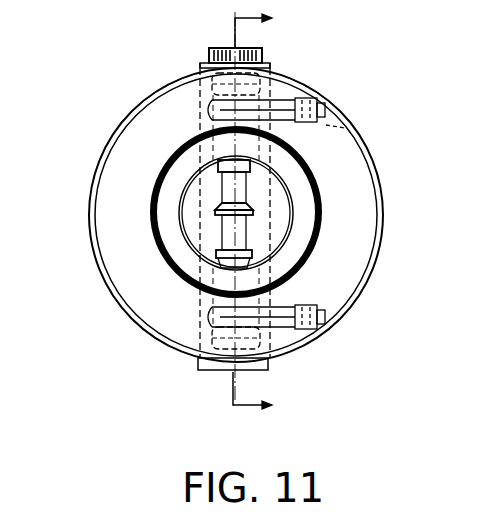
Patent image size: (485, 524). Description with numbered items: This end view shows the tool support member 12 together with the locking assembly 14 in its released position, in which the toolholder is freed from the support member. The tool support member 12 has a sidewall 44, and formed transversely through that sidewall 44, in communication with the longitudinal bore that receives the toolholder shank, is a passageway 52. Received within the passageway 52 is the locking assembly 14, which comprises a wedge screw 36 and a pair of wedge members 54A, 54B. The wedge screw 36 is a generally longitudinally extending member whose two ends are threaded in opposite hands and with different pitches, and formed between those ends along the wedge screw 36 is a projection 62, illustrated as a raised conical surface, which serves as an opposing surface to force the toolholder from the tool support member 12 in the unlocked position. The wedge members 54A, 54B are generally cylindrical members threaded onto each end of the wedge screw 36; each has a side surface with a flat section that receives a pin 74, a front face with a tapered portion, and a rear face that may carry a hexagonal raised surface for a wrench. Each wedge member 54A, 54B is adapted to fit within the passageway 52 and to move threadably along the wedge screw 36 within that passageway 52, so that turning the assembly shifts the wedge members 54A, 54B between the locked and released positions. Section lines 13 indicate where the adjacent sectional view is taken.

The tool support member 12 is at (205, 395).
The section line 13 is at (270, 212).
The locking assembly 14 is at (325, 349).
The wedge screw 36 is at (170, 243).
The sidewall 44 is at (373, 266).
The passageway 52 is at (285, 63).
The wedge member 54A is at (200, 66).
The wedge member 54B is at (200, 362).
The projection 62 is at (182, 204).
The pin 74 is at (316, 100).